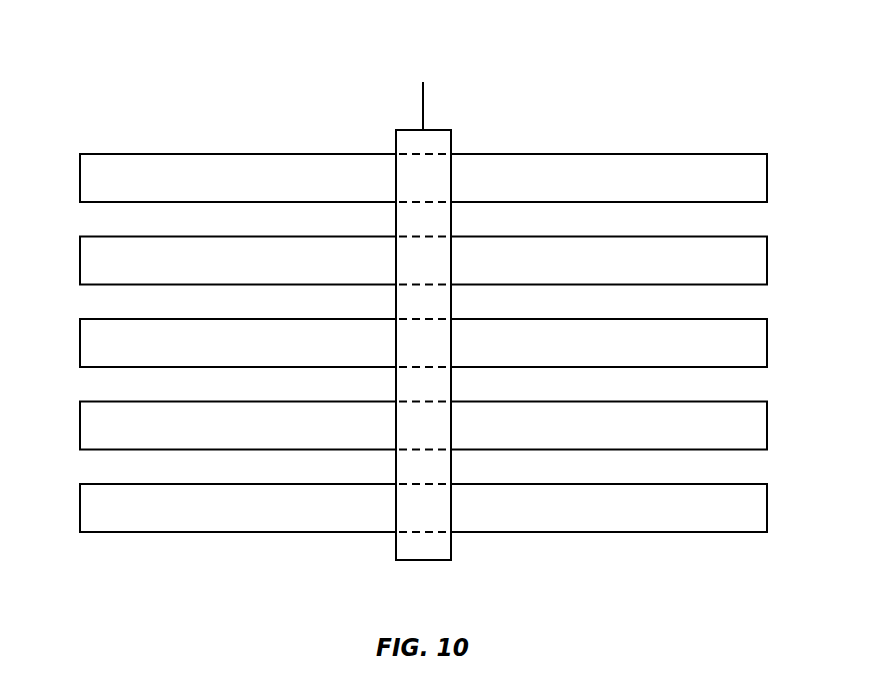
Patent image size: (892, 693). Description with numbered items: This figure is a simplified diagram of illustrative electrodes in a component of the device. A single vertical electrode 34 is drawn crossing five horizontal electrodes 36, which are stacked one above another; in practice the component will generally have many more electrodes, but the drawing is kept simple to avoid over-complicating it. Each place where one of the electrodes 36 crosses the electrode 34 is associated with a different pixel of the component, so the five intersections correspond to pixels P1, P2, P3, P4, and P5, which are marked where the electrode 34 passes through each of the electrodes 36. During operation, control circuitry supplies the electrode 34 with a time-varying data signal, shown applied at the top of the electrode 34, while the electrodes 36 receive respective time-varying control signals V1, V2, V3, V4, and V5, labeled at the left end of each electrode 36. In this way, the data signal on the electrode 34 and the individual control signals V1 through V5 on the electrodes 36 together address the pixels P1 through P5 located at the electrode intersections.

The electrode 34 is at (459, 304).
The electrodes 36 is at (437, 343).
The control signal V1 is at (403, 178).
The control signal V2 is at (403, 261).
The control signal V3 is at (403, 343).
The control signal V4 is at (403, 426).
The control signal V5 is at (403, 508).
The pixel P1 is at (423, 178).
The pixel P2 is at (423, 261).
The pixel P3 is at (423, 343).
The pixel P4 is at (423, 426).
The pixel P5 is at (423, 508).